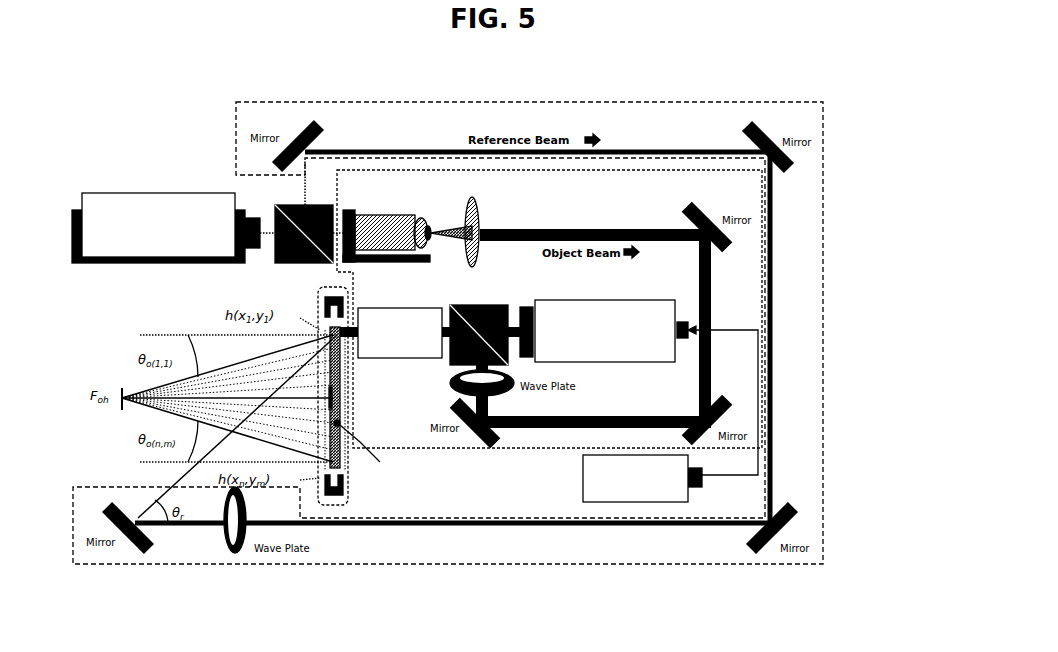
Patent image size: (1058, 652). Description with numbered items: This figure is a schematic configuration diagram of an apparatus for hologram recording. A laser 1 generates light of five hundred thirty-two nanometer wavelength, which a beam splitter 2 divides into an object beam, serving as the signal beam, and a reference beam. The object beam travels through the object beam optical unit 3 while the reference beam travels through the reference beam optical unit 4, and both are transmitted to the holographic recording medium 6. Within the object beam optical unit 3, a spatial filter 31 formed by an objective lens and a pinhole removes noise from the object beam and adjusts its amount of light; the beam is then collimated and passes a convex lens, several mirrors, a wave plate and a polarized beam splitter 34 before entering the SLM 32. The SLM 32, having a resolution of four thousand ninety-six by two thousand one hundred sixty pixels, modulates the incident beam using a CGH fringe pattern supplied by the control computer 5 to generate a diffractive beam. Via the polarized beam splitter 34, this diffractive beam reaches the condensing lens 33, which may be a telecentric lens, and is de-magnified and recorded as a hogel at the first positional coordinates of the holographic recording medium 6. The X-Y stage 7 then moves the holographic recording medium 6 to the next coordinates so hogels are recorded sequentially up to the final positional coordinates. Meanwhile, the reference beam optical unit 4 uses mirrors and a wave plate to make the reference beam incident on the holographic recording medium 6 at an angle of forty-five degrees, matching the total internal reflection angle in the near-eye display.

The laser 1 is at (163, 200).
The beam splitter 2 is at (314, 204).
The object beam optical unit 3 is at (628, 172).
The reference beam optical unit 4 is at (440, 102).
The control computer 5 is at (663, 503).
The holographic recording medium 6 is at (345, 417).
The X-Y stage 7 is at (338, 507).
The spatial filter 31 is at (430, 212).
The SLM 32 is at (603, 300).
The condensing lens 33 is at (406, 358).
The polarized beam splitter (PBS) 34 is at (487, 305).